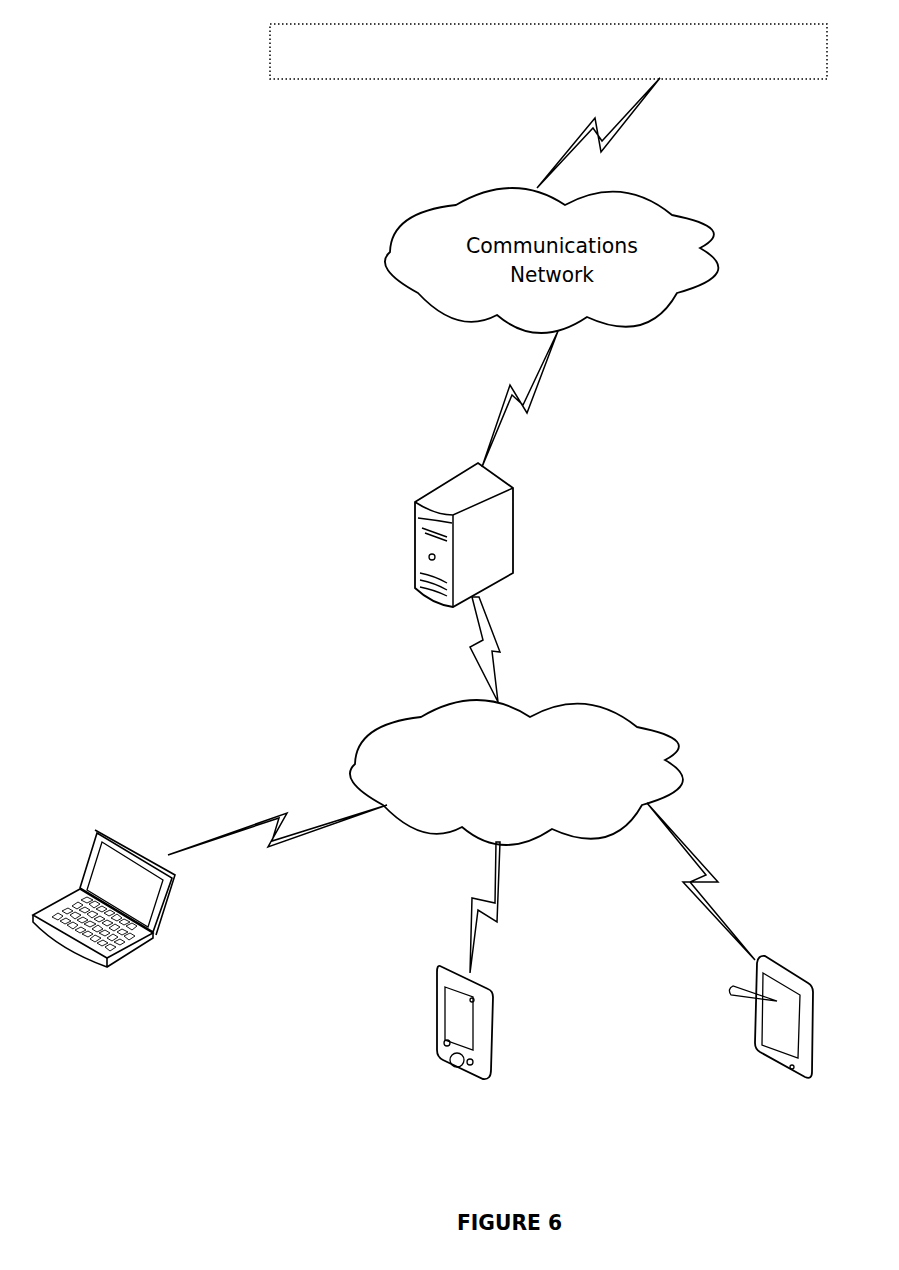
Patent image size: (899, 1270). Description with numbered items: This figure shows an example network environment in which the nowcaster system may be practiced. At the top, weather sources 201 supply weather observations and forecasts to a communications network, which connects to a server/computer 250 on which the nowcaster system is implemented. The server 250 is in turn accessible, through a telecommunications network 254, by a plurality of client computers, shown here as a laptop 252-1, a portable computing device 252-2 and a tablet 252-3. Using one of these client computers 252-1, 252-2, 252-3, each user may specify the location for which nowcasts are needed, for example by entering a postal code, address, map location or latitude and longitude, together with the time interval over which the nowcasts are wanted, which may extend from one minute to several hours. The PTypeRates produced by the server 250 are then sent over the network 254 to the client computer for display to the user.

The weather observation sources 201 is at (548, 51).
The server/computer 250 is at (415, 521).
The telecommunications network 254 is at (516, 772).
The client computer 252-1 is at (116, 911).
The client computer 252-2 is at (500, 1022).
The client computer 252-3 is at (763, 1023).